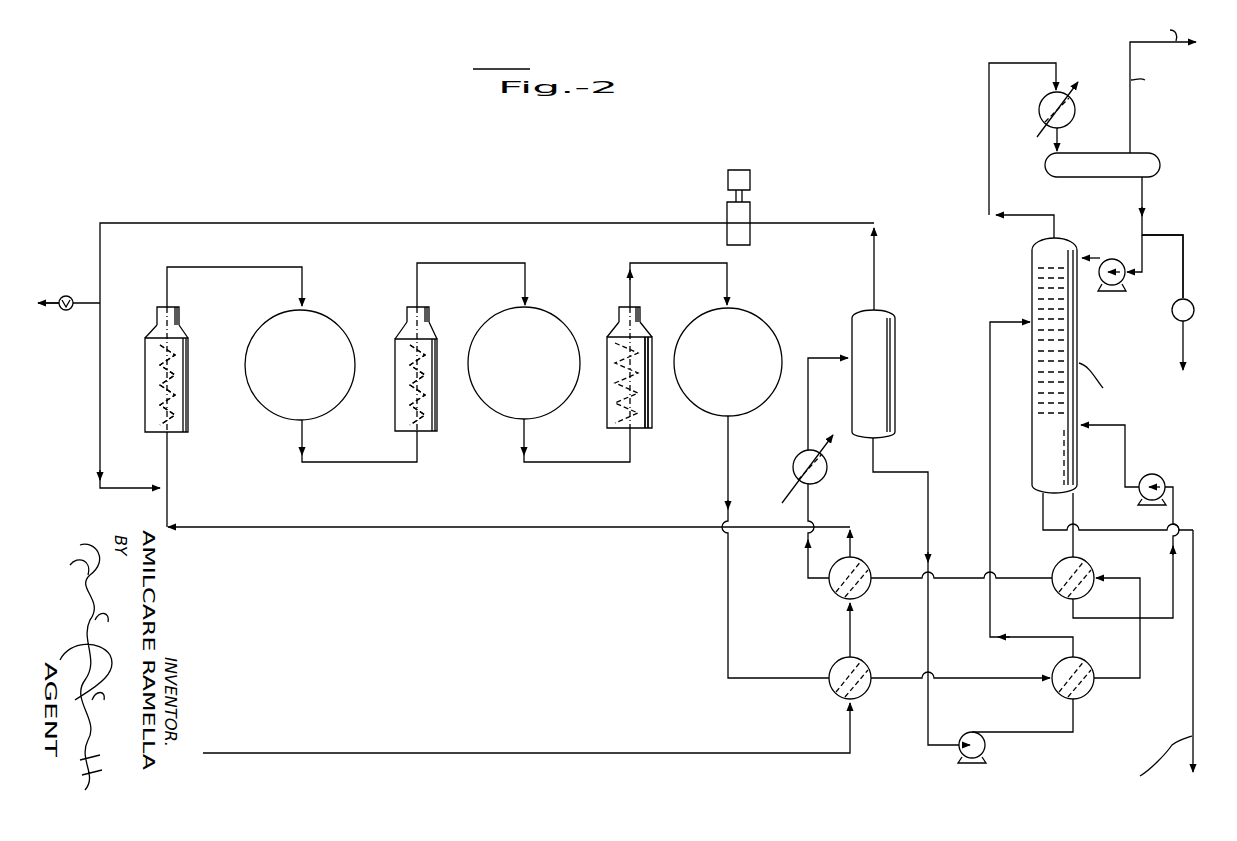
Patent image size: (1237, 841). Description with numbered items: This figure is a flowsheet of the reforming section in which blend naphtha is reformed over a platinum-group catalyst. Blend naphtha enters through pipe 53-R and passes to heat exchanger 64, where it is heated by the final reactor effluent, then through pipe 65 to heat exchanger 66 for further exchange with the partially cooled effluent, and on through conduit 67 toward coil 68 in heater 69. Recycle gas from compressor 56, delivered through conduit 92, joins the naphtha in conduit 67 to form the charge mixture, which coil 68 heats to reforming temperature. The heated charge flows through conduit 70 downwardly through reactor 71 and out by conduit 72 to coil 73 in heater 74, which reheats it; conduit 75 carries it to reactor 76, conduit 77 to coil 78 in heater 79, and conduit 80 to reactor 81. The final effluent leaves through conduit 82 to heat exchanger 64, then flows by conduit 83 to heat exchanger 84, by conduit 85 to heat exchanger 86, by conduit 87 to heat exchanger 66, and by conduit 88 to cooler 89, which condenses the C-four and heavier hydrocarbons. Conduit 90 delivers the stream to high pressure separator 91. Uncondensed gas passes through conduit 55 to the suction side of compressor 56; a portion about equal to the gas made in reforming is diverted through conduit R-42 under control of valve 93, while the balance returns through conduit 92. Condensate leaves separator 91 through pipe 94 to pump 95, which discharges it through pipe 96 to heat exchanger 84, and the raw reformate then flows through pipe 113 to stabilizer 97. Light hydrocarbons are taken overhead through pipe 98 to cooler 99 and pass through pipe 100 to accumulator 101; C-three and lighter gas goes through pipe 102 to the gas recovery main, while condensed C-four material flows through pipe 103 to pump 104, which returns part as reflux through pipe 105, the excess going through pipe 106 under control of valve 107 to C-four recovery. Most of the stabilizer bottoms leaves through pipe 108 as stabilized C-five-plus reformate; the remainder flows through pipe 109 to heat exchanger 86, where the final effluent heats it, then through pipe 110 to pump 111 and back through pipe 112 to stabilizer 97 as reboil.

The pipe 53-R is at (552, 754).
The conduit R-42 is at (51, 300).
The conduit 55 is at (875, 256).
The compressor 56 is at (750, 214).
The heat exchanger 64 is at (862, 696).
The pipe 65 is at (851, 630).
The heat exchanger 66 is at (859, 570).
The conduit 67 is at (486, 528).
The coil 68 is at (189, 428).
The heater 69 is at (190, 388).
The conduit 70 is at (250, 266).
The reactor 71 is at (330, 322).
The conduit 72 is at (342, 463).
The coil 73 is at (396, 398).
The heater 74 is at (438, 352).
The conduit 75 is at (495, 263).
The reactor 76 is at (568, 331).
The conduit 77 is at (555, 464).
The coil 78 is at (608, 405).
The heater 79 is at (652, 414).
The conduit 80 is at (700, 263).
The reactor 81 is at (774, 330).
The conduit 82 is at (727, 470).
The conduit 83 is at (974, 680).
The heat exchanger 84 is at (1090, 670).
The conduit 85 is at (1141, 650).
The heat exchanger 86 is at (1081, 570).
The conduit 87 is at (944, 580).
The conduit 88 is at (809, 497).
The cooler 89 is at (793, 464).
The conduit 90 is at (836, 357).
The high pressure separator 91 is at (896, 346).
The conduit 92 is at (398, 224).
The valve 93 is at (69, 315).
The pipe 94 is at (929, 514).
The pump 95 is at (960, 755).
The pipe 96 is at (1058, 732).
The stabilizer 97 is at (1038, 270).
The pipe 98 is at (988, 138).
The cooler 99 is at (1040, 104).
The pipe 100 is at (1058, 137).
The accumulator 101 is at (1052, 177).
The pipe 102 is at (1131, 120).
The pipe 103 is at (1143, 208).
The pump 104 is at (1122, 286).
The pipe 105 is at (1110, 259).
The pipe 106 is at (1164, 236).
The valve 107 is at (1191, 306).
The pipe 108 is at (1193, 608).
The pipe 109 is at (1074, 508).
The pipe 110 is at (1174, 510).
The pump 111 is at (1139, 490).
The pipe 112 is at (1126, 446).
The pipe 113 is at (991, 398).